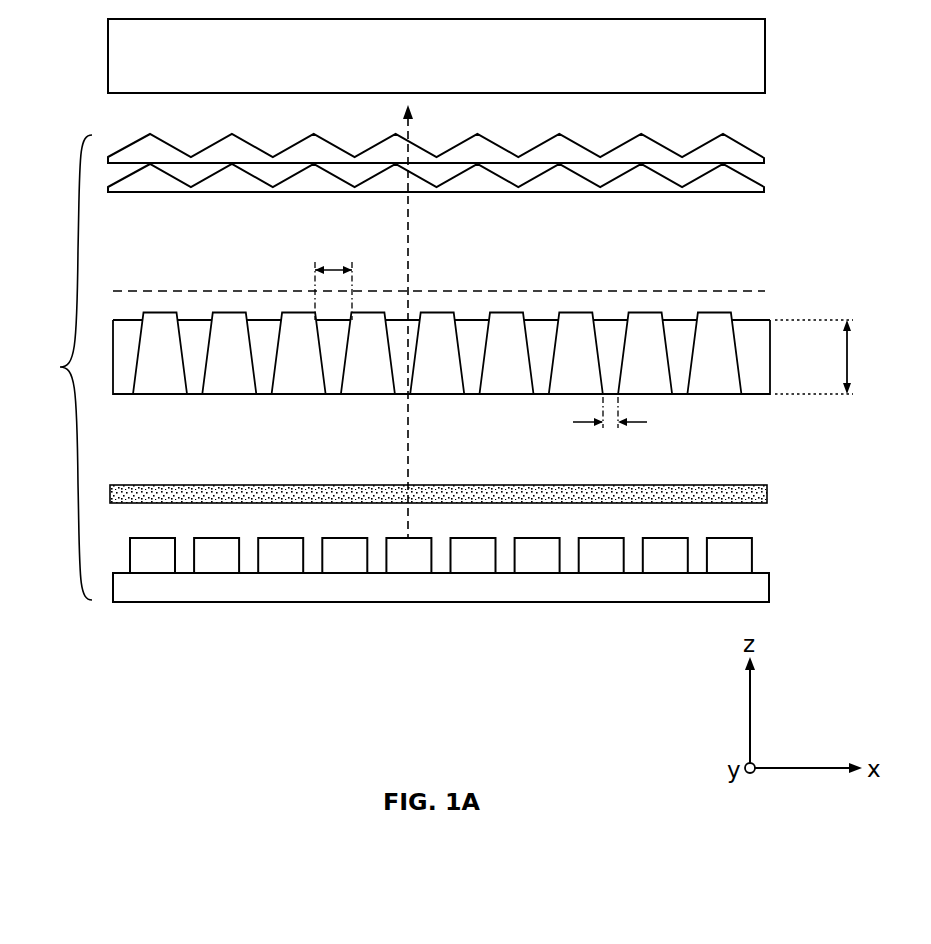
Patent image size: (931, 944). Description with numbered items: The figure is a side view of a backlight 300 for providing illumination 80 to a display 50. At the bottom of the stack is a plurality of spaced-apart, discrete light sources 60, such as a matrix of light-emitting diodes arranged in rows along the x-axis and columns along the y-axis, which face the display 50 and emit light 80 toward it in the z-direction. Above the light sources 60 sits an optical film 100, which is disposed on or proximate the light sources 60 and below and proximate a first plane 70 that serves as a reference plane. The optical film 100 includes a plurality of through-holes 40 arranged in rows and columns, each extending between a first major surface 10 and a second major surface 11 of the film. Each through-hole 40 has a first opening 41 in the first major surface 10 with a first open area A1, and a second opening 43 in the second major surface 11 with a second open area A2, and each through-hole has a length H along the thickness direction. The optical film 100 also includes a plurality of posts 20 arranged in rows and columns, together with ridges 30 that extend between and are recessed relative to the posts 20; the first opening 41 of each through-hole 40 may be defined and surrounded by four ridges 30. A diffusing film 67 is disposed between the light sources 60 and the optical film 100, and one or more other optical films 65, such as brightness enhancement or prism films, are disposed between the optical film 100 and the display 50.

The display 50 is at (752, 55).
The other optical films 65 is at (764, 160).
The illumination 80 is at (408, 238).
The first plane 70 is at (713, 290).
The first major surface 10 is at (429, 352).
The posts 20 is at (575, 327).
The ridges 30 is at (542, 318).
The through-holes 40 is at (197, 328).
The first opening 41 is at (188, 307).
The second opening 43 is at (192, 404).
The second major surface 11 is at (125, 397).
The optical film 100 is at (757, 348).
The length of through-hole H is at (850, 357).
The first open area A1 is at (333, 268).
The second open area A2 is at (595, 425).
The diffusing film 67 is at (767, 493).
The discrete light sources 60 is at (735, 560).
The backlight 300 is at (51, 367).